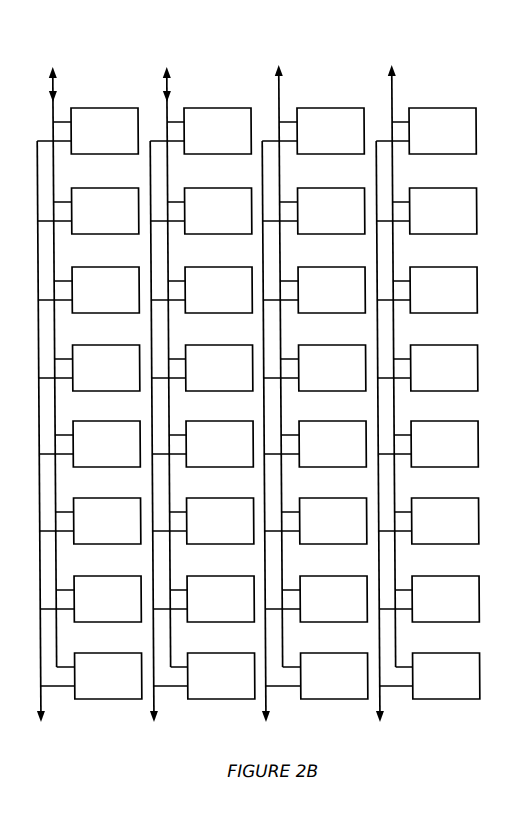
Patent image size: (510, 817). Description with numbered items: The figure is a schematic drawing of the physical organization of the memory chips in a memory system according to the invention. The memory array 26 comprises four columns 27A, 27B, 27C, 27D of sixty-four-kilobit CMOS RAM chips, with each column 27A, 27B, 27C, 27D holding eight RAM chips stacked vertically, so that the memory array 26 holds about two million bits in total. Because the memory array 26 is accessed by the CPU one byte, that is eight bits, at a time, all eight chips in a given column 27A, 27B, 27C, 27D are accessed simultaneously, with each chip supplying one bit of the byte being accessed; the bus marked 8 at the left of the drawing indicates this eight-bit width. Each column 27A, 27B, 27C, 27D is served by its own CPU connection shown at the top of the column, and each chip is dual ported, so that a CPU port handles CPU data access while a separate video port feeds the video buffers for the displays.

The 8-bit CPU data bus 8 is at (43, 97).
The memory array 26 is at (256, 384).
The column 27A is at (104, 712).
The column 27B is at (218, 712).
The column 27C is at (330, 712).
The column 27D is at (442, 712).